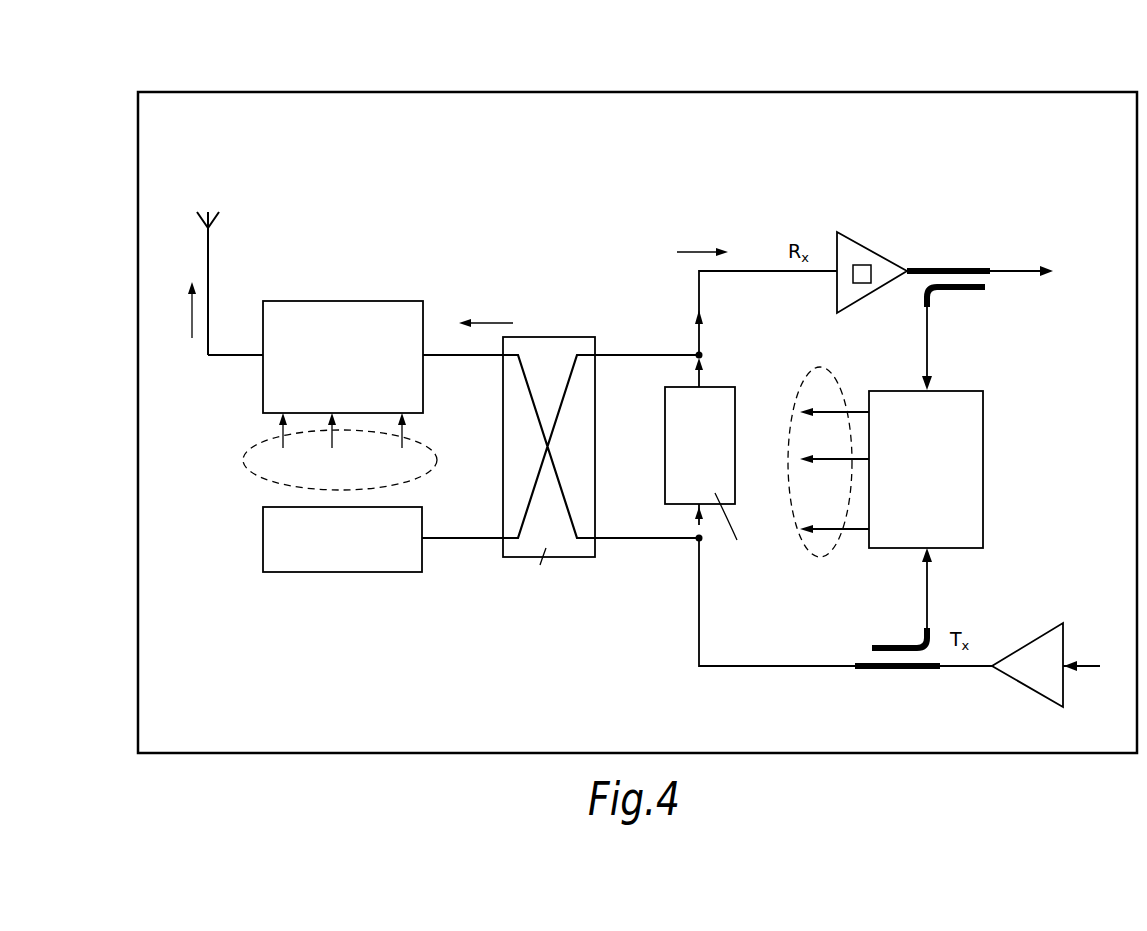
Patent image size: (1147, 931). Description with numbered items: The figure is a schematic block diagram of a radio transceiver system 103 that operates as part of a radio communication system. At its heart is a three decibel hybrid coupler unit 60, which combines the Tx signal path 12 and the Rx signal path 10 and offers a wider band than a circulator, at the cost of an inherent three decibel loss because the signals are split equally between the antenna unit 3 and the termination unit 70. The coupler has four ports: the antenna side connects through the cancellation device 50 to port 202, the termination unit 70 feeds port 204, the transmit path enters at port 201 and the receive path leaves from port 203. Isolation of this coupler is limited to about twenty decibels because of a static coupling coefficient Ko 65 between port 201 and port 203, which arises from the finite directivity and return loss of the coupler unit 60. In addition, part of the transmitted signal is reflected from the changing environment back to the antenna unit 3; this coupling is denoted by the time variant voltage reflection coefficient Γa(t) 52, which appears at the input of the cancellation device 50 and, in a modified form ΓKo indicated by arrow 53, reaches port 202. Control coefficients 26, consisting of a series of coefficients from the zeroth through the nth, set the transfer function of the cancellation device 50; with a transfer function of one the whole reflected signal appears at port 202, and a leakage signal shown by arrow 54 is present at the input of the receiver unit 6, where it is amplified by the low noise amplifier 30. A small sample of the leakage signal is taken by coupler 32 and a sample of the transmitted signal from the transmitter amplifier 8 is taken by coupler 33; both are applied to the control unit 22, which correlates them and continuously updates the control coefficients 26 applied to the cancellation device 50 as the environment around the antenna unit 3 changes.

The radio transceiver system 103 is at (530, 92).
The antenna unit 3 is at (207, 210).
The time variant voltage reflection coefficient Γa(t) 52 is at (190, 303).
The cancellation device 50 is at (348, 301).
The control coefficients 26 is at (437, 462).
The termination unit 70 is at (380, 571).
The modified reflected signal ΓKo 53 is at (483, 323).
The three decibel hybrid coupler unit 60 is at (560, 337).
The port 202 is at (503, 358).
The port 204 is at (503, 541).
The port 203 is at (598, 350).
The port 201 is at (598, 548).
The static coupling coefficient Ko 65 is at (729, 473).
The Rx signal path 10 is at (757, 273).
The leakage signal 54 is at (700, 250).
The receiver unit 6 is at (862, 244).
The low noise amplifier 30 is at (860, 285).
The receive signal coupler 32 is at (930, 323).
The control unit 22 is at (985, 442).
The transmit signal coupler 33 is at (930, 600).
The Tx signal path 12 is at (767, 668).
The transmitter amplifier 8 is at (1025, 682).